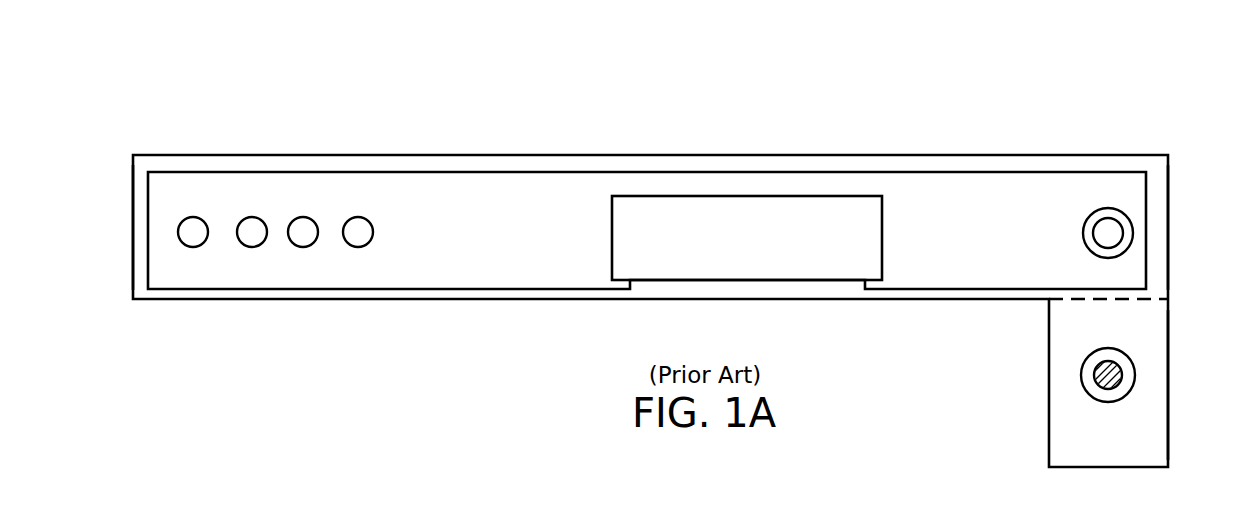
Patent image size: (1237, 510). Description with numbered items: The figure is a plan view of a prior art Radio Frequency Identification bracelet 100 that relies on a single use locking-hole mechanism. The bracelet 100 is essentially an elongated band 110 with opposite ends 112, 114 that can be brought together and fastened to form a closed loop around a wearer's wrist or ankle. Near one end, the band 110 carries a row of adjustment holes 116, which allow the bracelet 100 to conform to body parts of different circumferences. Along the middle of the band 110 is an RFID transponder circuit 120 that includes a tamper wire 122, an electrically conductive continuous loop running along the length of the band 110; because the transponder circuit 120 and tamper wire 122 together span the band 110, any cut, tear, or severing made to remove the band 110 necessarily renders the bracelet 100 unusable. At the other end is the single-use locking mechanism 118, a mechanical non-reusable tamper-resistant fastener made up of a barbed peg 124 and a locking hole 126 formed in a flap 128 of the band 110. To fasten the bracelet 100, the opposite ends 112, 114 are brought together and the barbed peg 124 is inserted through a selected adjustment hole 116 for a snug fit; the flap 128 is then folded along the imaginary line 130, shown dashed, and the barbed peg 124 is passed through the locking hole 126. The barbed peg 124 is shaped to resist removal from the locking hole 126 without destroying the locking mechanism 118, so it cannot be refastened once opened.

The RFID bracelet 100 is at (706, 82).
The band 110 is at (451, 154).
The first end of band 112 is at (133, 204).
The second end of band 114 is at (1168, 229).
The adjustment holes 116 is at (350, 245).
The single-use locking mechanism 118 is at (1095, 233).
The RFID transponder circuit 120 is at (758, 272).
The tamper wire 122 is at (452, 289).
The barbed peg 124 is at (1108, 230).
The locking hole 126 is at (1108, 362).
The flap 128 is at (1168, 425).
The imaginary line 130 is at (1168, 298).